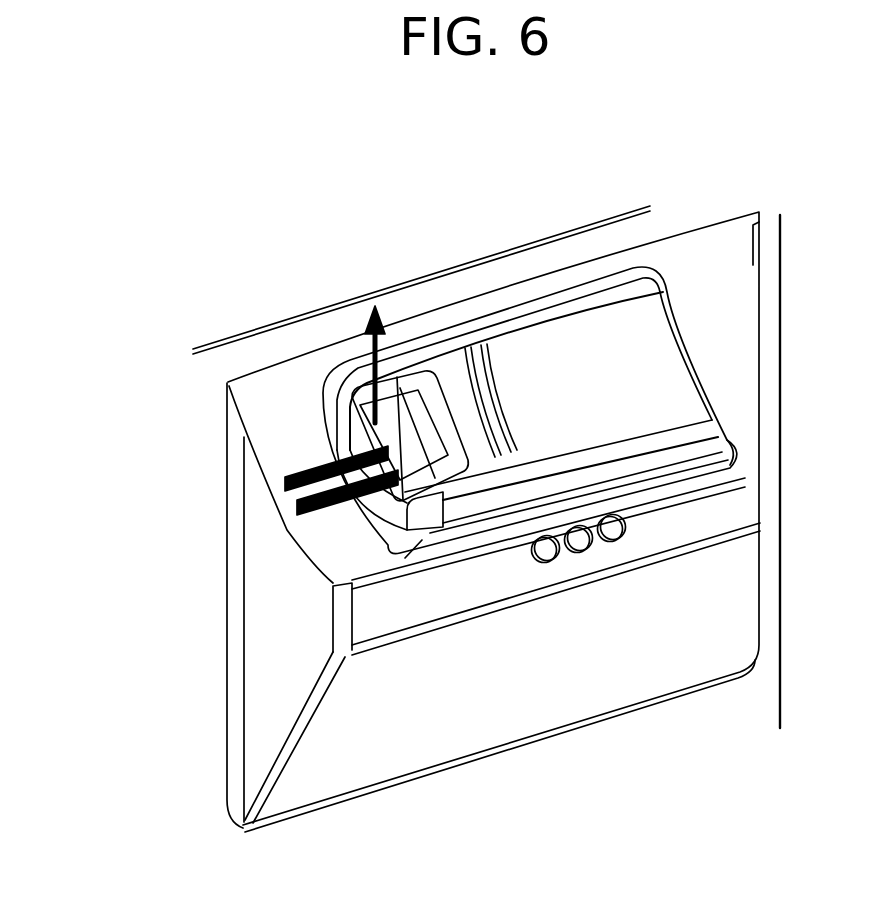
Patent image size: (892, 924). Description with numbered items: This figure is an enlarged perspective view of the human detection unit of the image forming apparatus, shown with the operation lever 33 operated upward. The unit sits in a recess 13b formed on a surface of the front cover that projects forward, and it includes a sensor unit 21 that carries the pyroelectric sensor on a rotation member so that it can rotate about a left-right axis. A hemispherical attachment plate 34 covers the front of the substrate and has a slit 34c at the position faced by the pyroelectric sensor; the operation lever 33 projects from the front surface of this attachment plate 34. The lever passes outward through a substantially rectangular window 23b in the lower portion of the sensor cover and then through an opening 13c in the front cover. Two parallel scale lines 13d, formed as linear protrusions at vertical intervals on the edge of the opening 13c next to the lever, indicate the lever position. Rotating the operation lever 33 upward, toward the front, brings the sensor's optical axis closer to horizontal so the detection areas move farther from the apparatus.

The recess 13b is at (297, 627).
The opening 13c is at (422, 530).
The scale lines 13d is at (300, 512).
The sensor unit 21 is at (555, 358).
The window 23b is at (503, 333).
The operation lever 33 is at (318, 428).
The attachment plate 34 is at (443, 363).
The slit 34c is at (500, 423).